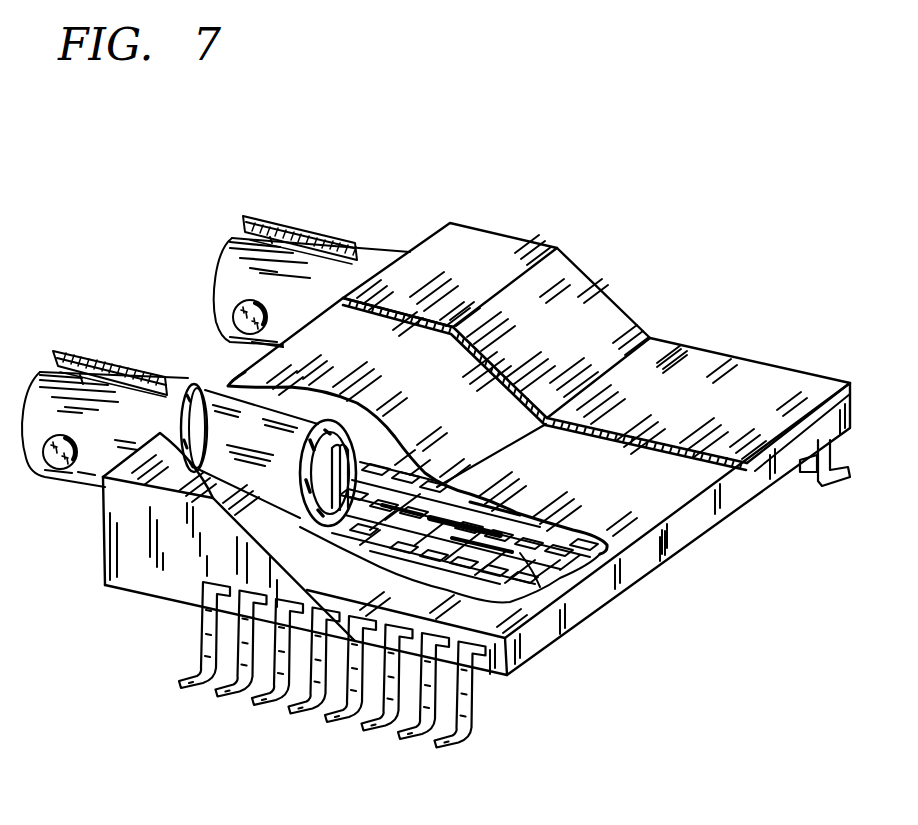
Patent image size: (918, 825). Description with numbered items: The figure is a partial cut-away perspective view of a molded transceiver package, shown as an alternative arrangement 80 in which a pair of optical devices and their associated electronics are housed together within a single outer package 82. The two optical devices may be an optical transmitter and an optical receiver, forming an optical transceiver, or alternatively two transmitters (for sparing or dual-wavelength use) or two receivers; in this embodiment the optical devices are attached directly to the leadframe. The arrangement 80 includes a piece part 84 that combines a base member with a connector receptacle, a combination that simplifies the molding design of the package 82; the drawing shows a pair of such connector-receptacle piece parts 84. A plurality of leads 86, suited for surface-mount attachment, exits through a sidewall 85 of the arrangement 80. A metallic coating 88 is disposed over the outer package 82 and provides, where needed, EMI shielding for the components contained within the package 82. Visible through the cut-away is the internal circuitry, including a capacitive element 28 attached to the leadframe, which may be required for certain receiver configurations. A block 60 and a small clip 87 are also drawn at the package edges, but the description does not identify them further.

The alternative arrangement 80 is at (378, 779).
The outer package 82 is at (663, 483).
The piece part 84 is at (368, 258).
The sidewall 85 is at (107, 559).
The leads 86 is at (193, 684).
The retaining clip 87 is at (818, 482).
The metallic coating 88 is at (506, 242).
The heat sink block 60 is at (167, 598).
The capacitive element 28 is at (541, 590).